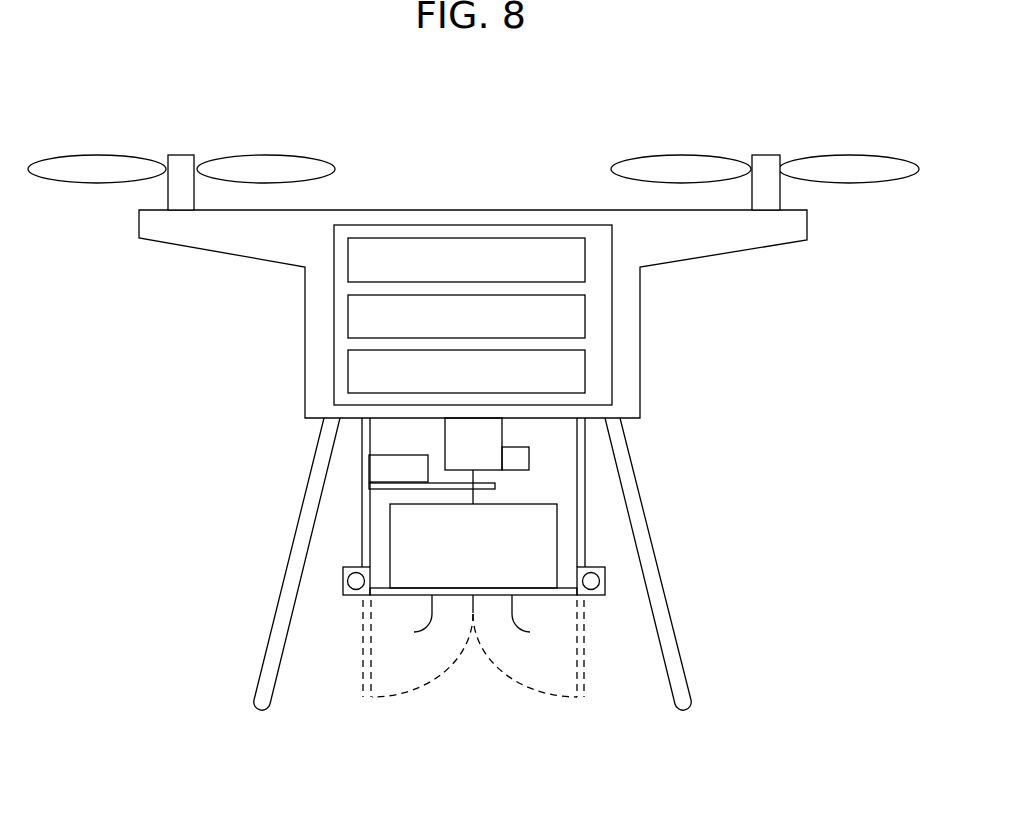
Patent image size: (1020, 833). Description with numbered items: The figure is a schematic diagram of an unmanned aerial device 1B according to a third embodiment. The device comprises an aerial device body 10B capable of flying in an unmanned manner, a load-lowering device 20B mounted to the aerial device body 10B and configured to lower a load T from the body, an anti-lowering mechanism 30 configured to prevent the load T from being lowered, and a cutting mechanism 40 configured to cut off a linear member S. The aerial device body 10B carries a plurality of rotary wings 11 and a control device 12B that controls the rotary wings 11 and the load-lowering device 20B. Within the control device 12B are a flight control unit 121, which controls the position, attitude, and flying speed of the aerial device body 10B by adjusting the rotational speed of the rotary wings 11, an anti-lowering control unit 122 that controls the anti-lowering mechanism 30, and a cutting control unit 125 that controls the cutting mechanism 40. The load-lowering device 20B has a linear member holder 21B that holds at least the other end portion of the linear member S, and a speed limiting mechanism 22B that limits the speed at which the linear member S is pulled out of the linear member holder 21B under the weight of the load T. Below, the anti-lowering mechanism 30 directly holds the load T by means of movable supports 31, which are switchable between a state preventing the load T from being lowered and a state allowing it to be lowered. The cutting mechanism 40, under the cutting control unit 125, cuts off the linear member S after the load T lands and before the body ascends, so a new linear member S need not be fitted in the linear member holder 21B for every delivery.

The unmanned aerial device 1B is at (700, 128).
The aerial device body 10B is at (542, 192).
The rotary wings 11 is at (110, 155).
The control device 12B is at (404, 205).
The flight control unit 121 is at (348, 262).
The anti-lowering control unit 122 is at (348, 318).
The cutting control unit 125 is at (348, 374).
The load-lowering device 20B is at (557, 435).
The linear member holder 21B is at (445, 430).
The speed limiting mechanism 22B is at (529, 458).
The cutting mechanism 40 is at (495, 485).
The anti-lowering mechanism 30 is at (604, 548).
The movable supports 31 is at (414, 632).
The linear member S is at (470, 496).
The load T is at (390, 547).